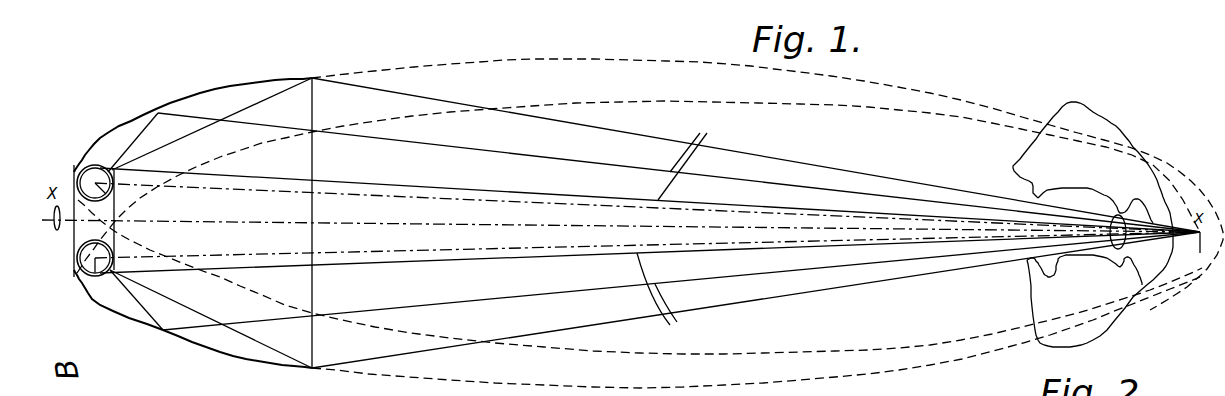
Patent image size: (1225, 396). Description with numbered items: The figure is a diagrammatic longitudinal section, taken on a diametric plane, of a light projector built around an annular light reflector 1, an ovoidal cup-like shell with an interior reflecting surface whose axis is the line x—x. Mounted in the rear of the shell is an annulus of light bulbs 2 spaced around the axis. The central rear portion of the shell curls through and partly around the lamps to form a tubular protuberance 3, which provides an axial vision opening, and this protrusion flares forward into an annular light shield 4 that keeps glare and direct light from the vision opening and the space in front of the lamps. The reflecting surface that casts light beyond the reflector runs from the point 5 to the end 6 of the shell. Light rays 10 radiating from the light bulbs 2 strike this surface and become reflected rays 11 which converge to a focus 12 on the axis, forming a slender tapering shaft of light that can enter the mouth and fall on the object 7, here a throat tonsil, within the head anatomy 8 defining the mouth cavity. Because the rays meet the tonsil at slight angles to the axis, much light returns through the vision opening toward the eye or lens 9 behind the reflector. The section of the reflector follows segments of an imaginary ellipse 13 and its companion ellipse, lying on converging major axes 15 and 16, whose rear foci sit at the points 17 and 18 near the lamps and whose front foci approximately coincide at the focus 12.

The annular light reflector 1 is at (143, 118).
The light bulbs 2 is at (103, 170).
The tubular protuberance 3 is at (115, 228).
The annular light shield 4 is at (122, 178).
The point 5 is at (74, 198).
The end of reflector shell 6 is at (312, 78).
The object 7 is at (1107, 330).
The anatomy of the head 8 is at (1085, 178).
The eye or lens 9 is at (621, 255).
The light rays 10 is at (145, 132).
The reflected rays 11 is at (680, 228).
The focus 12 is at (1205, 285).
The imaginary intersecting ellipse 13 is at (670, 64).
The major axis 15 is at (498, 200).
The major axis 16 is at (493, 250).
The rear focus 17 is at (115, 197).
The rear focus 18 is at (115, 250).